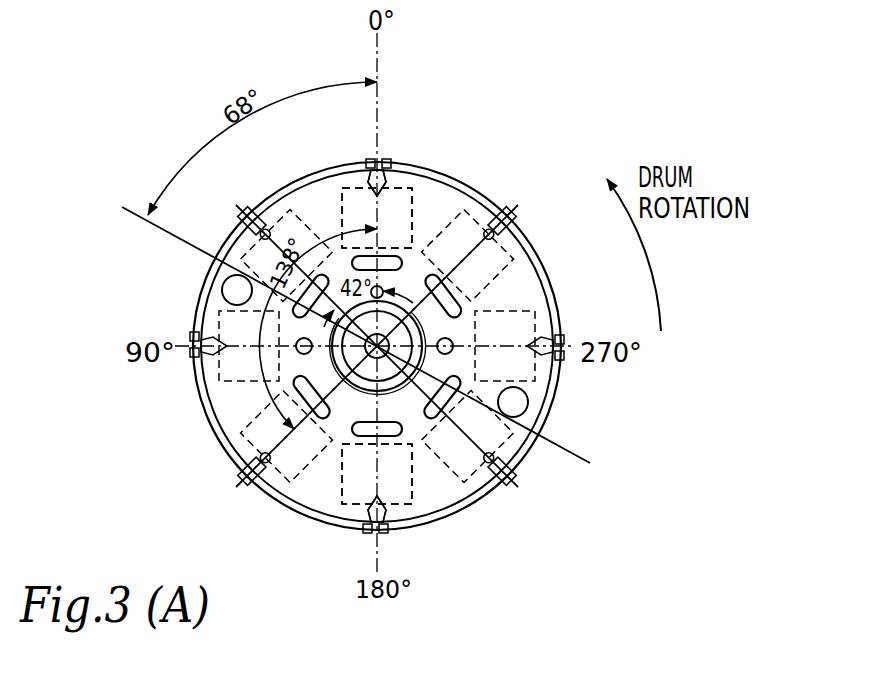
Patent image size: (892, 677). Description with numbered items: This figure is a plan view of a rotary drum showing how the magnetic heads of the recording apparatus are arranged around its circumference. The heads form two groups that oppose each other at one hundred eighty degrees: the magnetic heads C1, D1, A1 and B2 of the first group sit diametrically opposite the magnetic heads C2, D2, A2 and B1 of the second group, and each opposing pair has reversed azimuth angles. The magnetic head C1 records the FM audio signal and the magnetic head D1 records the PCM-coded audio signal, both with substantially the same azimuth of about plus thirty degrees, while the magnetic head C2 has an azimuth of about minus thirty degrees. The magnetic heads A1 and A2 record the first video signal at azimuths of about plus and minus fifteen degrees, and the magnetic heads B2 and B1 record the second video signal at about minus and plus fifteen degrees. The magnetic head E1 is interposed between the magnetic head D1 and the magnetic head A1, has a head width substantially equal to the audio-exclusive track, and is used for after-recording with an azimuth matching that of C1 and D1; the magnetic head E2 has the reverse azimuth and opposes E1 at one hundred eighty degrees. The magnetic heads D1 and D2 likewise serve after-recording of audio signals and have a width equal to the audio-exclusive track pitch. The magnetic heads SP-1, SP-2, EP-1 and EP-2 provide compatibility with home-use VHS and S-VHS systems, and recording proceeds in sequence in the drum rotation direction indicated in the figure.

The magnetic head A1 is at (537, 477).
The magnetic head A2 is at (219, 215).
The magnetic head B1 is at (244, 194).
The magnetic head B2 is at (510, 497).
The magnetic head C1 is at (521, 202).
The magnetic head C2 is at (216, 474).
The magnetic head D1 is at (585, 363).
The magnetic head D2 is at (170, 328).
The magnetic head E1 is at (564, 413).
The magnetic head E2 is at (190, 279).
The magnetic head EP-1 is at (411, 535).
The magnetic head EP-2 is at (356, 186).
The magnetic head SP-1 is at (411, 160).
The magnetic head SP-2 is at (353, 509).